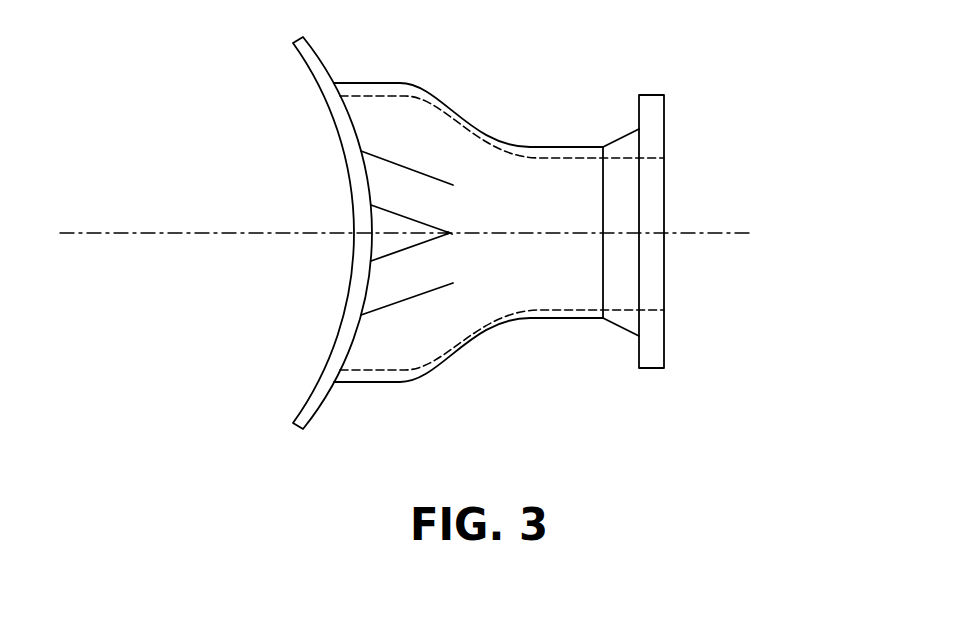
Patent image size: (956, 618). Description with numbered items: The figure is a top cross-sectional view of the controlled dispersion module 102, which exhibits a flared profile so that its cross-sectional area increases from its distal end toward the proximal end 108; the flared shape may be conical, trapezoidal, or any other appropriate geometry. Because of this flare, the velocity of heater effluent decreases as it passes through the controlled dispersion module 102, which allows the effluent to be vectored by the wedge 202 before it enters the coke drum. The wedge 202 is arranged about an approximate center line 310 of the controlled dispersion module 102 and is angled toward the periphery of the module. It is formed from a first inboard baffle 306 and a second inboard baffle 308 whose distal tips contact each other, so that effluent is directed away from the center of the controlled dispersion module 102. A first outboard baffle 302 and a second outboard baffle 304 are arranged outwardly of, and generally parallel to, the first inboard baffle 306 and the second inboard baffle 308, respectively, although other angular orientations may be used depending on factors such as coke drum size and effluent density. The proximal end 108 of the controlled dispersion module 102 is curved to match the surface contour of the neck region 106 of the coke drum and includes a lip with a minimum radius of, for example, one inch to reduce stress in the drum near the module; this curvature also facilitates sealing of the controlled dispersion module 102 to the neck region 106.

The controlled dispersion module 102 is at (520, 140).
The neck region 106 is at (347, 105).
The proximal end 108 is at (347, 360).
The wedge 202 is at (450, 233).
The first outboard baffle 302 is at (395, 305).
The second outboard baffle 304 is at (405, 167).
The first inboard baffle 306 is at (450, 233).
The second inboard baffle 308 is at (420, 222).
The center line 310 is at (523, 233).